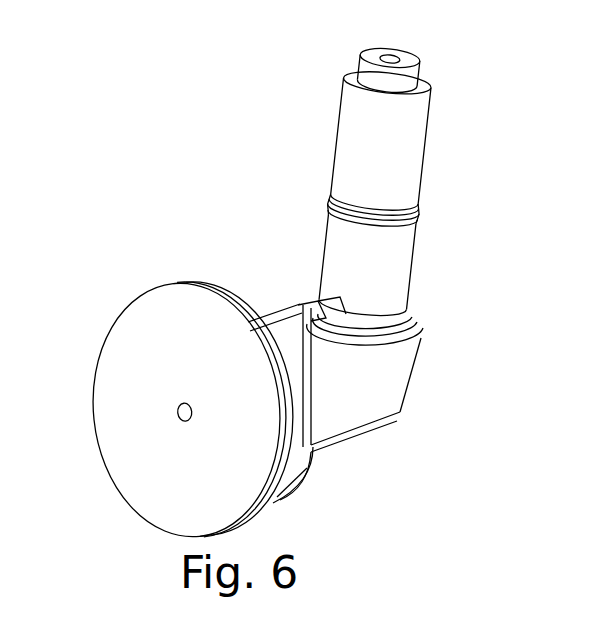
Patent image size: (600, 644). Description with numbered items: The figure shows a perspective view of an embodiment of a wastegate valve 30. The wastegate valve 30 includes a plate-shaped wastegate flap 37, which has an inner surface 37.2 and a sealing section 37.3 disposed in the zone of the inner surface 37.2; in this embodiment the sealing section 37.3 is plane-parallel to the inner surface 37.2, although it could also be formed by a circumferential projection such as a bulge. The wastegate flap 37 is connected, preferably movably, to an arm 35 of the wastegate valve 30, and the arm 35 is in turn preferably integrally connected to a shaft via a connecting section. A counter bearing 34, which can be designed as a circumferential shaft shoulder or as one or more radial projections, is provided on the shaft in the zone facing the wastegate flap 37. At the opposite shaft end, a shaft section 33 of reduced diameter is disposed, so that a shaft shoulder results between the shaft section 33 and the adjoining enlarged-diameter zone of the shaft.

The wastegate valve 30 is at (327, 172).
The shaft section of reduced diameter 33 is at (327, 63).
The counter bearing 34 is at (410, 311).
The arm 35 is at (284, 323).
The wastegate flap 37 is at (165, 280).
The inner surface 37.2 is at (142, 351).
The sealing section 37.3 is at (133, 316).